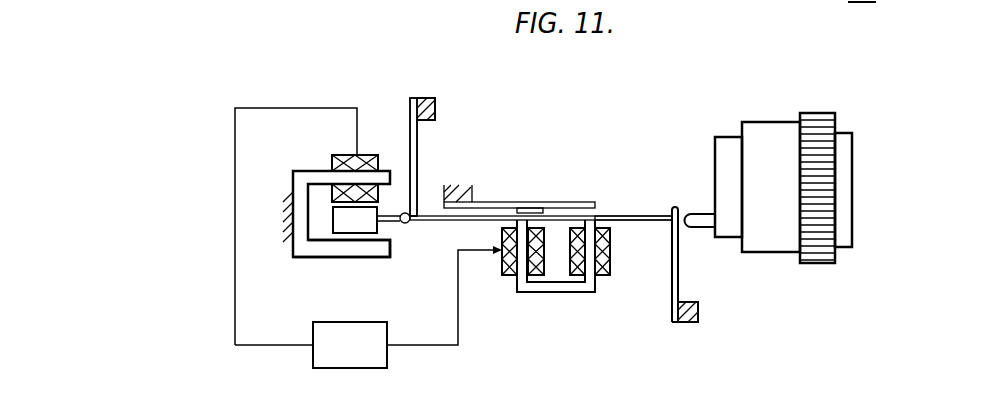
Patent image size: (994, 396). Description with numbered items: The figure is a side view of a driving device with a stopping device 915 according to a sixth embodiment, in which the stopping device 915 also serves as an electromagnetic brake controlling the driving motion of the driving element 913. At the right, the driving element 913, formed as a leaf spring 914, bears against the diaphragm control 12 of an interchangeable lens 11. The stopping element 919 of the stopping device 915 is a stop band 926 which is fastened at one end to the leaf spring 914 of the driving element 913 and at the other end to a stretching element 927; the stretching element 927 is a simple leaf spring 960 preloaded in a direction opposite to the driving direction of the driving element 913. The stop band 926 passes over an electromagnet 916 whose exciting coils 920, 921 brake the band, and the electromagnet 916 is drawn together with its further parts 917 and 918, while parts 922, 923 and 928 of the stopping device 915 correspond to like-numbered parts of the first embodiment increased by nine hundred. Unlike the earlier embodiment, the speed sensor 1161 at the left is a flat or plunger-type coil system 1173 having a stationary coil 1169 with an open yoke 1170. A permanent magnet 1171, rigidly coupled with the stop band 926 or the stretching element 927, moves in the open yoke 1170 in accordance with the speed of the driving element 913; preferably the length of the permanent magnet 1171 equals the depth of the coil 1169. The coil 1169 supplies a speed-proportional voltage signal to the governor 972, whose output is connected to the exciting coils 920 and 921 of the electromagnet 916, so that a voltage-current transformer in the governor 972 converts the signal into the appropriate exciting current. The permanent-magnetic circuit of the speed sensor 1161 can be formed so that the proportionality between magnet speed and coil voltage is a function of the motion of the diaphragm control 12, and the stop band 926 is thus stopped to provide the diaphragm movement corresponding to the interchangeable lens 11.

The interchangeable lens 11 is at (847, 157).
The diaphragm control 12 is at (700, 212).
The driving element 913 is at (688, 280).
The leaf spring 914 is at (680, 252).
The stopping device 915 is at (543, 305).
The electromagnet 916 is at (598, 292).
The coil 917 is at (602, 227).
The coil 918 is at (500, 226).
The stopping element 919 is at (613, 205).
The exciting coil 920 is at (565, 252).
The exciting coil 921 is at (508, 277).
The plate 922 is at (545, 207).
The support 923 is at (482, 202).
The stop band 926 is at (652, 213).
The stretching element 927 is at (428, 136).
The post arm 928 is at (402, 155).
The leaf spring 960 is at (407, 105).
The governor 972 is at (372, 353).
The speed sensor 1161 is at (303, 155).
The stationary coil 1169 is at (345, 153).
The open yoke 1170 is at (298, 180).
The permanent magnet 1171 is at (376, 232).
The flat or plunger-type coil system 1173 is at (317, 240).